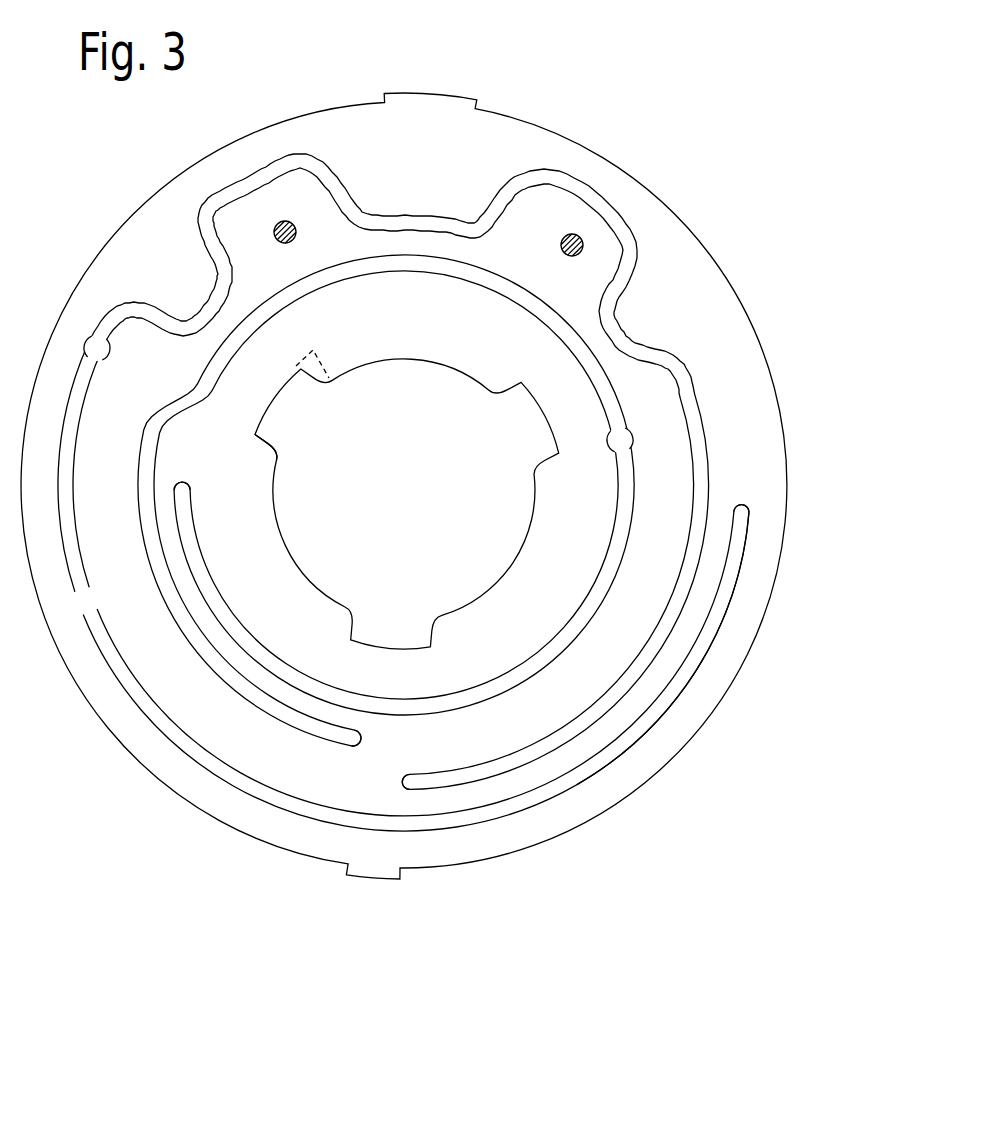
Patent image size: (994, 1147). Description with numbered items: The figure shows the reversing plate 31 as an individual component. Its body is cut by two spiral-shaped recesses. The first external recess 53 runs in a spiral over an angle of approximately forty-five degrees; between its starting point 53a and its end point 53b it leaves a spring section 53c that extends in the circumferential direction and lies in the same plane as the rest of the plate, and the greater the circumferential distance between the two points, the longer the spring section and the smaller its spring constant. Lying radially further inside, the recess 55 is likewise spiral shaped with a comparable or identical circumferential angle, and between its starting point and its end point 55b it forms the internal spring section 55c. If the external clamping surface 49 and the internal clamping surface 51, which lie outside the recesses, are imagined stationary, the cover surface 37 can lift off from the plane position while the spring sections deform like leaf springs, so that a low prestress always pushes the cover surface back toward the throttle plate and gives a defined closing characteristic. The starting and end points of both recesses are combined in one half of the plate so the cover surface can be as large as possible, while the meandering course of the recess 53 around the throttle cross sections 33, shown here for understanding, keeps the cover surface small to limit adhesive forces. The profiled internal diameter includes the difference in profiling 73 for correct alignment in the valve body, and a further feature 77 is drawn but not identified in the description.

The reversing plate 31 is at (454, 525).
The throttle cross sections 33 is at (276, 223).
The cover surface 37 is at (286, 188).
The external clamping surface 49 is at (753, 427).
The internal clamping surface 51 is at (458, 670).
The first external recess 53 is at (612, 757).
The starting point 53a is at (747, 513).
The end point 53b is at (410, 787).
The spring section 53c is at (652, 692).
The recess 55 is at (350, 750).
The end point 55b is at (183, 493).
The internal spring section 55c is at (230, 663).
The difference in profiling 73 is at (312, 374).
The notch 77 is at (277, 420).